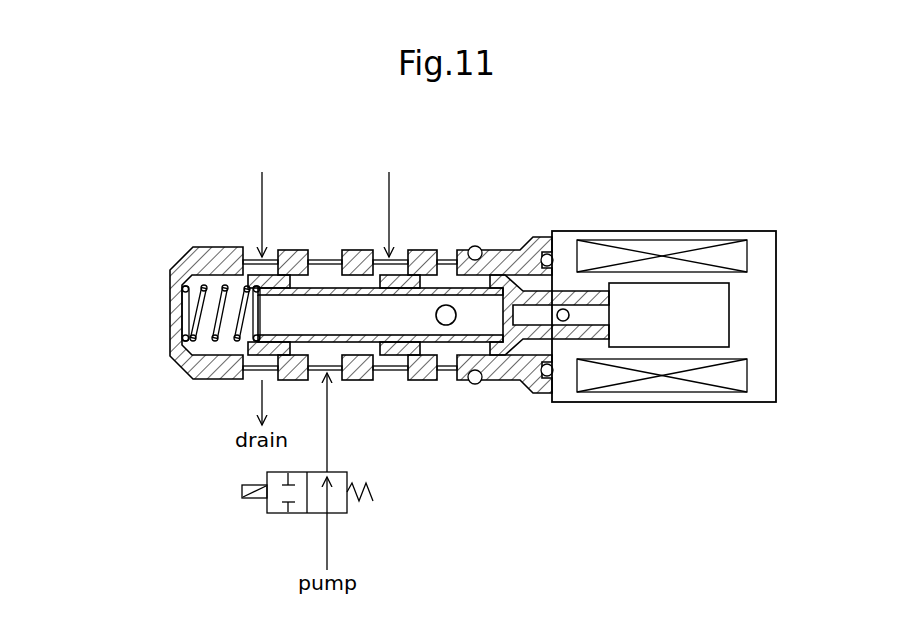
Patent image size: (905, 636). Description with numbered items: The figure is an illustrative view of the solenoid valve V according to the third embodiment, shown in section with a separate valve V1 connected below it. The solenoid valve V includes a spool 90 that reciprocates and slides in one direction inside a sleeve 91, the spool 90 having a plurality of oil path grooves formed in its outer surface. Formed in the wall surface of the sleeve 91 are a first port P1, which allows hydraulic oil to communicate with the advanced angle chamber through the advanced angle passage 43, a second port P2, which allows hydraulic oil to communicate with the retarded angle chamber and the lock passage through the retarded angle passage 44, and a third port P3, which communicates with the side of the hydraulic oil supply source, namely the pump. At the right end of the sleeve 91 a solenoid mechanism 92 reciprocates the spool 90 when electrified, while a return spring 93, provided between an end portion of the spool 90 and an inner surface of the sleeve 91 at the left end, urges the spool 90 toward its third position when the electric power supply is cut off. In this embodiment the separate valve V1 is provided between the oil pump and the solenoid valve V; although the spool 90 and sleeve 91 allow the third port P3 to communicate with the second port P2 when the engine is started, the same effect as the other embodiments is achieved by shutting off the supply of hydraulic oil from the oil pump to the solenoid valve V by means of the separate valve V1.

The advanced angle passage 43 is at (263, 222).
The retarded angle passage 44 is at (388, 198).
The spool 90 is at (423, 365).
The sleeve 91 is at (210, 380).
The solenoid mechanism 92 is at (693, 230).
The return spring 93 is at (181, 313).
The solenoid valve V is at (523, 228).
The separate valve V1 is at (282, 513).
The first port P1 is at (254, 257).
The second port P2 is at (399, 257).
The third port P3 is at (334, 372).